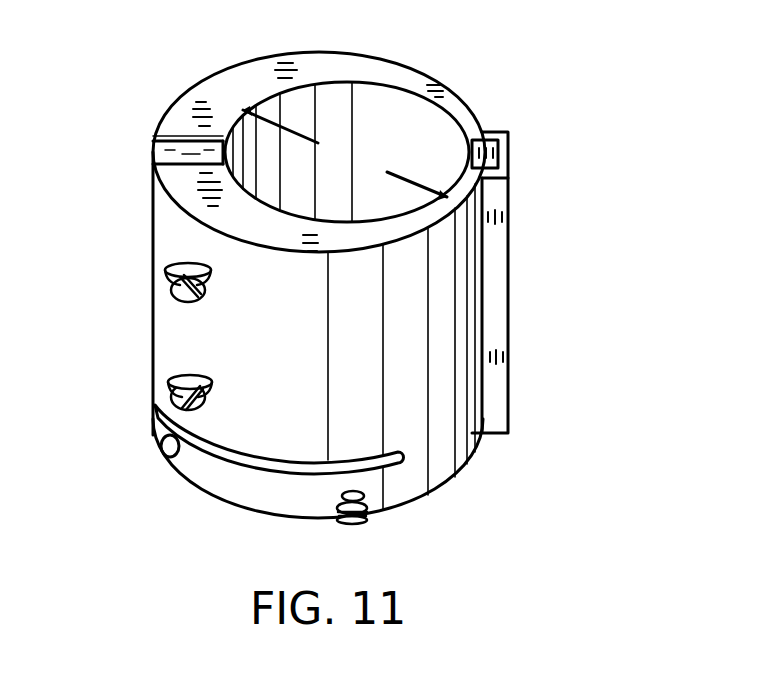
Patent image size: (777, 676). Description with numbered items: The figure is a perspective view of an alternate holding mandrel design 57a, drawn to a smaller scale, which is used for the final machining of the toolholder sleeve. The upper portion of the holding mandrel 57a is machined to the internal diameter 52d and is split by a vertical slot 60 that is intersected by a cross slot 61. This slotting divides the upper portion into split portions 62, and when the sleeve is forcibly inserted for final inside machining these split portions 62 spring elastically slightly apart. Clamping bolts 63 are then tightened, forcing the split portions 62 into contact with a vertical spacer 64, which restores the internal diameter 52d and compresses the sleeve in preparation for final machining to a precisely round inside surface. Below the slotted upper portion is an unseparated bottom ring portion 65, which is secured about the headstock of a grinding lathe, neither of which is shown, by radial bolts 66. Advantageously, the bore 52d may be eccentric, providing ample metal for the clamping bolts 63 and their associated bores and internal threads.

The split portions 62 is at (237, 78).
The vertical slot 60 is at (175, 137).
The vertical spacer 64 is at (153, 153).
The internal diameter 52d is at (291, 127).
The holding mandrel 57a is at (425, 75).
The bottom ring portion 65 is at (264, 497).
The cross slot 61 is at (162, 412).
The clamping bolts 63 is at (183, 380).
The radial bolts 66 is at (355, 523).